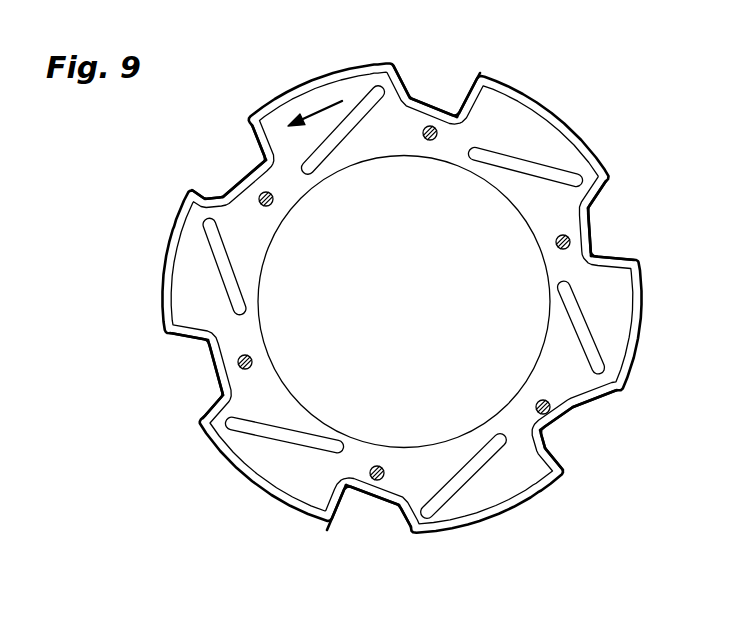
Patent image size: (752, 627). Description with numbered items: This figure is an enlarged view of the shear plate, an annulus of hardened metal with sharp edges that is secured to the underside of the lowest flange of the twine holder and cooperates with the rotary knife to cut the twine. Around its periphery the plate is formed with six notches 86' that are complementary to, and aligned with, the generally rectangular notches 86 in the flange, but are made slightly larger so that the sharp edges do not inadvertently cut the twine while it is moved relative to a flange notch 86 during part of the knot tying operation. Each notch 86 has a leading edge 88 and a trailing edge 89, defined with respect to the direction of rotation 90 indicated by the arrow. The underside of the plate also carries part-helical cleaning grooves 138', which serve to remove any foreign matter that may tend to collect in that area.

The notch 86 is at (406, 302).
The notch 86' is at (412, 309).
The leading edge 88 is at (401, 78).
The trailing edge 89 is at (476, 74).
The cleaning groove 138' is at (397, 325).
The direction of rotation 90 is at (320, 100).